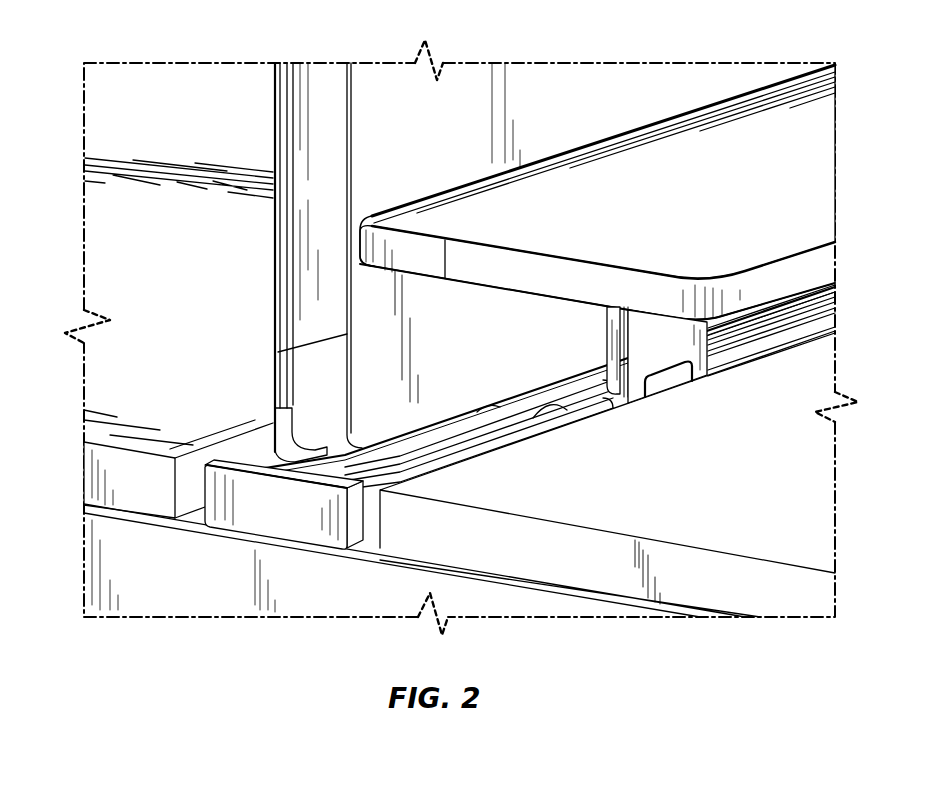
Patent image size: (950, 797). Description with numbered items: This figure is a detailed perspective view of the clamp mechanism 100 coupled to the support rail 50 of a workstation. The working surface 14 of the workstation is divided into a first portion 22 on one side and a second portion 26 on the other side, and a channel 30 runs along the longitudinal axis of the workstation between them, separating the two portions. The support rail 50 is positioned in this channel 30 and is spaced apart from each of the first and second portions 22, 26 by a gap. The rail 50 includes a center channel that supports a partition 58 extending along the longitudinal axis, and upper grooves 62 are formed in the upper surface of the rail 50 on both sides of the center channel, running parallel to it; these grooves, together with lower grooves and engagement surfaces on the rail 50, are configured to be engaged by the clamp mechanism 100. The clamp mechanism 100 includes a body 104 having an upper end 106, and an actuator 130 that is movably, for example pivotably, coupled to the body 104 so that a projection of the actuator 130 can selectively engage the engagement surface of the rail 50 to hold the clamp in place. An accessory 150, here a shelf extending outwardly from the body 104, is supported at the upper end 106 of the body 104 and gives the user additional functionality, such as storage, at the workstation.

The working surface 14 is at (157, 153).
The first portion 22 is at (120, 277).
The second portion 26 is at (762, 528).
The channel 30 is at (357, 550).
The support rail 50 is at (423, 447).
The partition 58 is at (380, 117).
The upper grooves 62 is at (552, 412).
The clamp mechanism 100 is at (666, 394).
The body 104 is at (663, 348).
The upper end 106 is at (615, 342).
The actuator 130 is at (665, 383).
The accessory 150 is at (650, 173).